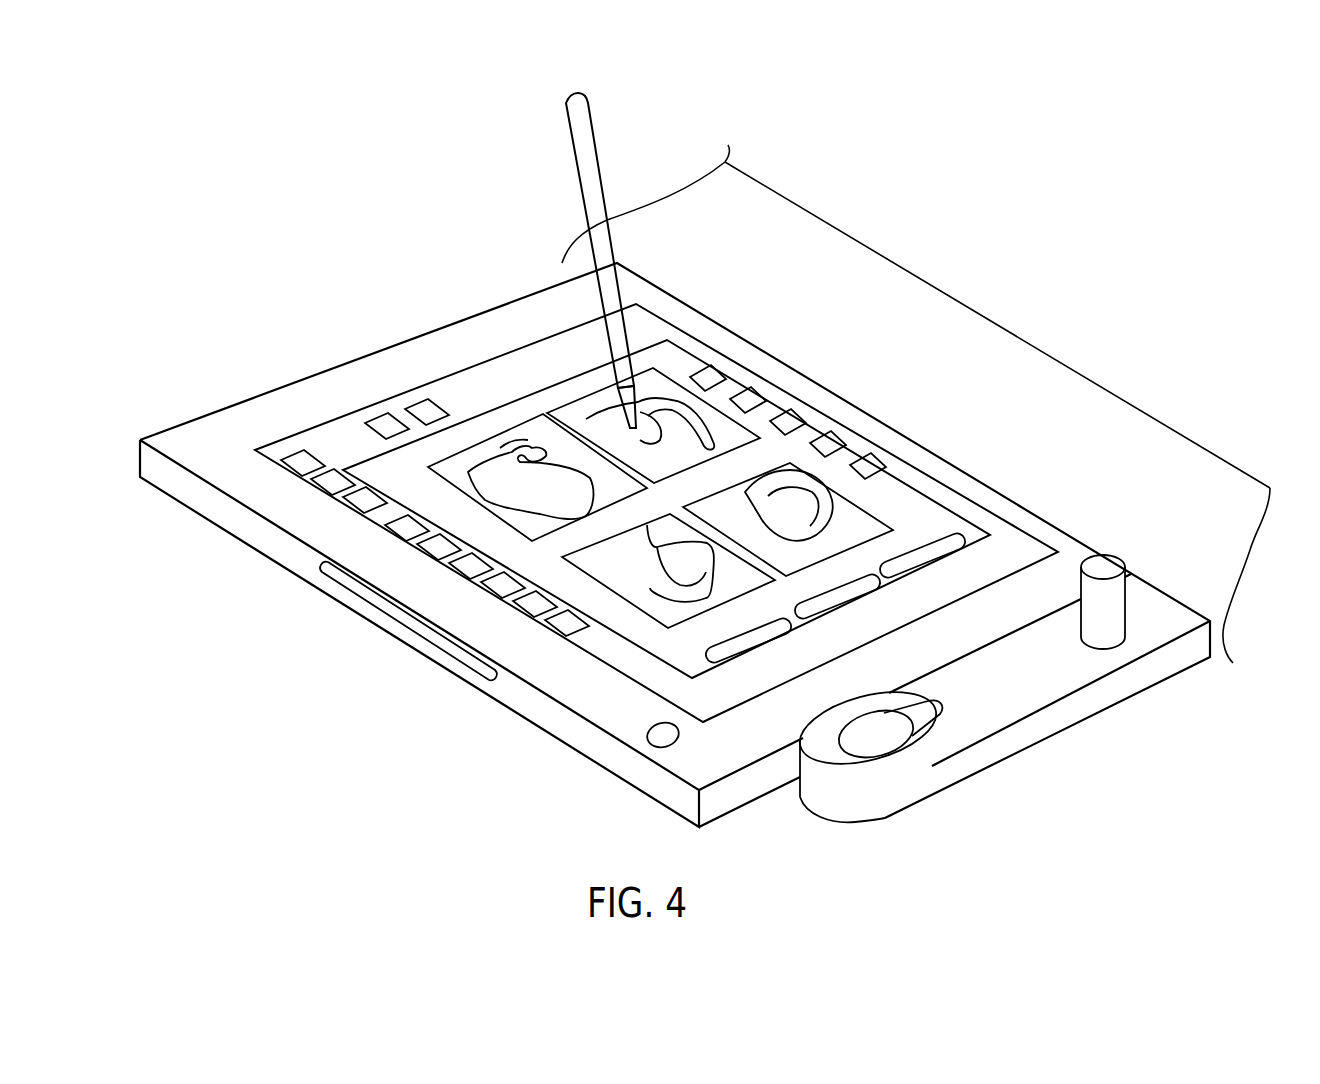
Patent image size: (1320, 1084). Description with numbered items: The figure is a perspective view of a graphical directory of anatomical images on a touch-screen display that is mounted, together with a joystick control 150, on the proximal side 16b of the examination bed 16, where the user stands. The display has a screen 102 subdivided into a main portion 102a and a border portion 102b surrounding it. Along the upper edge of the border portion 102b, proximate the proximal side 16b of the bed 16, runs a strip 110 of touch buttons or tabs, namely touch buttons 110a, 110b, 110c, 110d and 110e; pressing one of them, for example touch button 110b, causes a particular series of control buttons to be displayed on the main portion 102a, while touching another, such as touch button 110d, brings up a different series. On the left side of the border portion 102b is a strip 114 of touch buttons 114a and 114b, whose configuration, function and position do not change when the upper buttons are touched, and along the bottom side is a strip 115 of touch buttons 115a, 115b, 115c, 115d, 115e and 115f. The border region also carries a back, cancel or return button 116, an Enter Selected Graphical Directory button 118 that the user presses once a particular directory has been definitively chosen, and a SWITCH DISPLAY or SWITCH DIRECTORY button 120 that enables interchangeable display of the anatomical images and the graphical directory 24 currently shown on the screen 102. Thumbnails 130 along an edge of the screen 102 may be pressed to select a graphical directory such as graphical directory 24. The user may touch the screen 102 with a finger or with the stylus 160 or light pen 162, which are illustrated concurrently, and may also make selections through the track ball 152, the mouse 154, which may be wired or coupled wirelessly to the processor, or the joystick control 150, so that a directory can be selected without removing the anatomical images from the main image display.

The examination bed 16 is at (1104, 389).
The proximal side 16b is at (972, 488).
The graphical directory 24 is at (862, 522).
The screen 102 is at (582, 388).
The main portion 102a is at (550, 400).
The border portion 102b is at (320, 440).
The strip of touch buttons 110 is at (842, 385).
The touch button 110a is at (712, 378).
The touch button 110b is at (752, 398).
The touch button 110c is at (793, 425).
The touch button 110d is at (833, 445).
The touch button 110e is at (914, 453).
The strip of touch buttons 114 is at (412, 354).
The touch button 114a is at (383, 420).
The touch button 114b is at (422, 410).
The strip of touch buttons 115 is at (392, 625).
The touch button 115a is at (400, 528).
The touch button 115b is at (435, 549).
The touch button 115c is at (462, 568).
The touch button 115d is at (497, 587).
The touch button 115e is at (530, 606).
The touch button 115f is at (562, 625).
The return button 116 is at (300, 460).
The Enter Selected Graphical Directory button 118 is at (325, 484).
The switch display button 120 is at (352, 500).
The thumbnails 130 is at (757, 637).
The joystick control 150 is at (1117, 600).
The track ball 152 is at (650, 738).
The mouse 154 is at (876, 748).
The stylus 160 is at (545, 253).
The light pen 162 is at (565, 105).